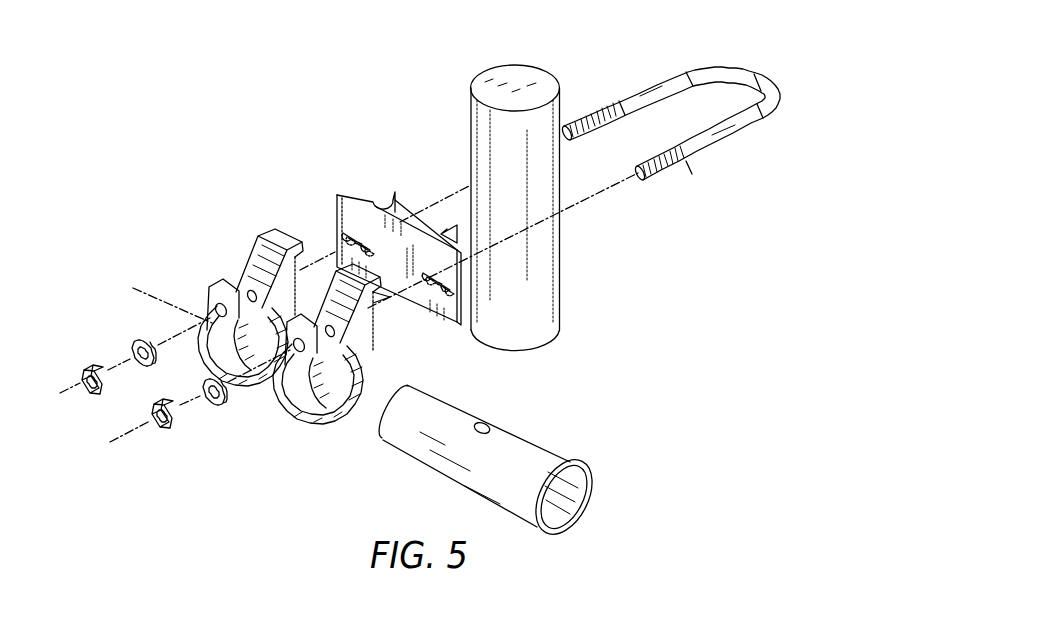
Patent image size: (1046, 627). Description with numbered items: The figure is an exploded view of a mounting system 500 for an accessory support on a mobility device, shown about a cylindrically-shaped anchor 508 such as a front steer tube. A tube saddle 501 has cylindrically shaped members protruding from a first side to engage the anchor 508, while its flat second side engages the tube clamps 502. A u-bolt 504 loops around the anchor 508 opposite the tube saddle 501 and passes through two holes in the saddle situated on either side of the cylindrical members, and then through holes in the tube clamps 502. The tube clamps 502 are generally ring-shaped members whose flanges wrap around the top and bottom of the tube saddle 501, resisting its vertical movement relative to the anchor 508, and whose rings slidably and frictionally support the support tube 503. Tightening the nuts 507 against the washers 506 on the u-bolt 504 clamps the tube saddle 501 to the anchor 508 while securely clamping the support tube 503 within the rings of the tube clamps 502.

The mounting system 500 is at (395, 99).
The tube saddle 501 is at (352, 192).
The tube clamps 502 is at (248, 267).
The support tube 503 is at (560, 447).
The u-bolt 504 is at (729, 140).
The washers 506 is at (225, 412).
The nuts 507 is at (172, 430).
The anchor 508 is at (563, 257).